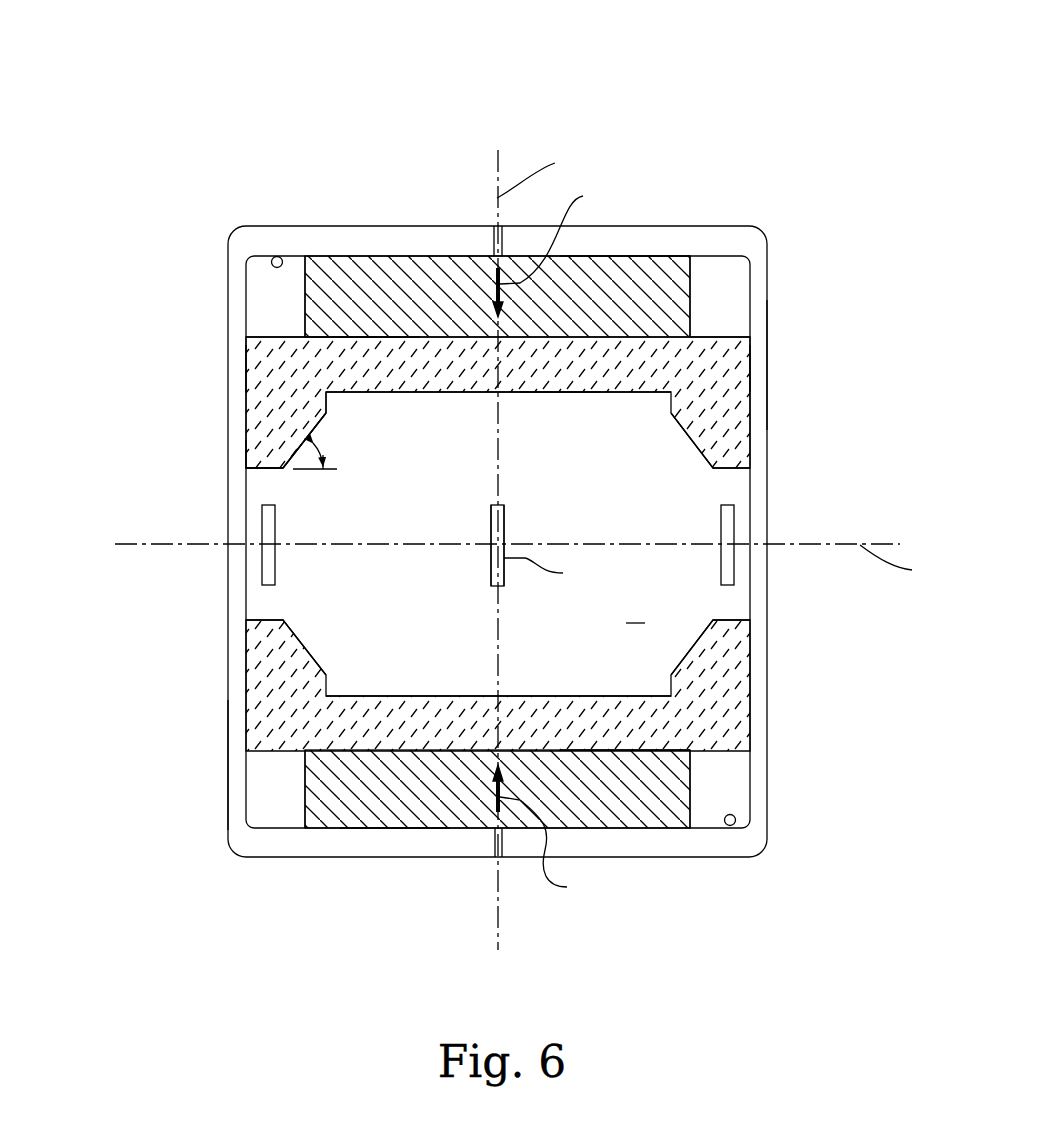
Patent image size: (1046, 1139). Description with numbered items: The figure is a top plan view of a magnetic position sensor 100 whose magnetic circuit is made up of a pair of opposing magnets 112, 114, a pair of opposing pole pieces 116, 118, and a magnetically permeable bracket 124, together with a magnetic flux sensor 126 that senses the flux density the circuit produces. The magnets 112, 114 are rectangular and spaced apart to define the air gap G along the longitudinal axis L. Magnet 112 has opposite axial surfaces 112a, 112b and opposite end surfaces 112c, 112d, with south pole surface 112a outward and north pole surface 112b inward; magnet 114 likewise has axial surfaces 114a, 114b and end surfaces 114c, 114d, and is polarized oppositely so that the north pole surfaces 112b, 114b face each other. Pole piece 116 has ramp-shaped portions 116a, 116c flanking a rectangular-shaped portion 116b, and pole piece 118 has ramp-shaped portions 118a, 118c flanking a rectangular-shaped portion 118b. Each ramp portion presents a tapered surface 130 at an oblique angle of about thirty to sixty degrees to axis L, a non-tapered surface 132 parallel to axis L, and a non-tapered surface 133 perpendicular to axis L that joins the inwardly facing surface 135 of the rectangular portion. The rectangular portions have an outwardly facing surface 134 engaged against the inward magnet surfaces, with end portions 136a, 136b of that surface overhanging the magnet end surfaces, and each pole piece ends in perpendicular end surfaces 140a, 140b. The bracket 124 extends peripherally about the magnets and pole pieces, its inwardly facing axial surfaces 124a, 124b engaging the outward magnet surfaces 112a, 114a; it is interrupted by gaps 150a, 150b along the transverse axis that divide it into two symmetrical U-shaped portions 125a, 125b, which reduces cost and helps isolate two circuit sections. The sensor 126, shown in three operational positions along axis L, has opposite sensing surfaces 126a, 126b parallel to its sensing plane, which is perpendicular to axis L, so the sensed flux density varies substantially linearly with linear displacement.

The magnetic position sensor 100 is at (183, 140).
The magnet 112 is at (699, 292).
The axial surface 112a is at (656, 255).
The axial surface 112b is at (247, 382).
The end surface 112c is at (303, 287).
The end surface 112d is at (690, 272).
The magnet 114 is at (699, 792).
The axial surface 114a is at (393, 829).
The axial surface 114b is at (690, 750).
The end surface 114c is at (304, 788).
The end surface 114d is at (693, 767).
The pole piece 116 is at (754, 431).
The ramp-shaped portion 116a is at (261, 475).
The rectangular-shaped portion 116b is at (530, 399).
The ramp-shaped portion 116c is at (734, 472).
The pole piece 118 is at (754, 668).
The ramp-shaped portion 118a is at (255, 615).
The rectangular-shaped portion 118b is at (426, 695).
The ramp-shaped portion 118c is at (735, 613).
The magnetically permeable bracket 124 is at (181, 320).
The inwardly facing axial surface 124a is at (272, 256).
The inwardly facing axial surface 124b is at (730, 826).
The bracket portion 125a is at (226, 808).
The bracket portion 125b is at (771, 360).
The magnetic flux sensor 126 is at (489, 560).
The sensing surface 126a is at (504, 522).
The sensing surface 126b is at (491, 520).
The tapered surface 130 is at (293, 469).
The non-tapered surface 132 is at (247, 482).
The non-tapered surface 133 is at (326, 402).
The outwardly facing surface 134 is at (373, 335).
The inwardly facing surface 135 is at (560, 392).
The end portion 136a is at (270, 337).
The end portion 136b is at (713, 337).
The end surface 140a is at (320, 337).
The end surface 140b is at (753, 392).
The gap 150a is at (488, 198).
The gap 150b is at (507, 874).